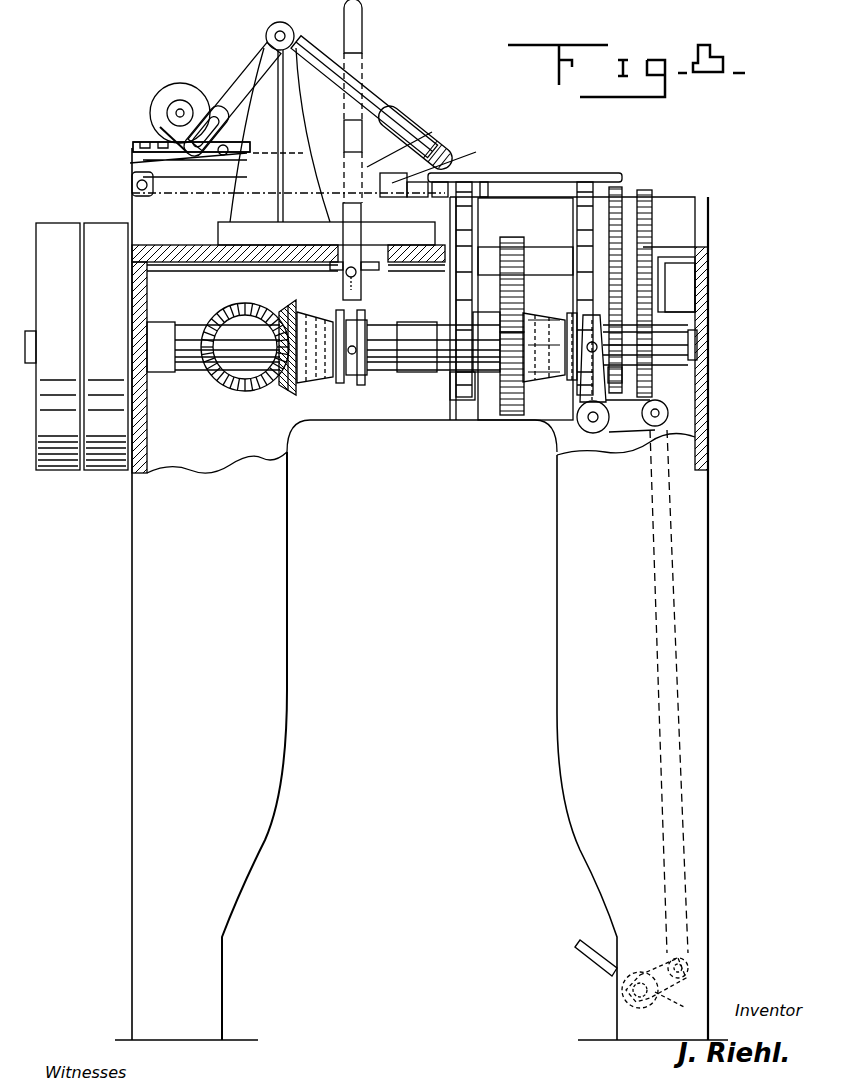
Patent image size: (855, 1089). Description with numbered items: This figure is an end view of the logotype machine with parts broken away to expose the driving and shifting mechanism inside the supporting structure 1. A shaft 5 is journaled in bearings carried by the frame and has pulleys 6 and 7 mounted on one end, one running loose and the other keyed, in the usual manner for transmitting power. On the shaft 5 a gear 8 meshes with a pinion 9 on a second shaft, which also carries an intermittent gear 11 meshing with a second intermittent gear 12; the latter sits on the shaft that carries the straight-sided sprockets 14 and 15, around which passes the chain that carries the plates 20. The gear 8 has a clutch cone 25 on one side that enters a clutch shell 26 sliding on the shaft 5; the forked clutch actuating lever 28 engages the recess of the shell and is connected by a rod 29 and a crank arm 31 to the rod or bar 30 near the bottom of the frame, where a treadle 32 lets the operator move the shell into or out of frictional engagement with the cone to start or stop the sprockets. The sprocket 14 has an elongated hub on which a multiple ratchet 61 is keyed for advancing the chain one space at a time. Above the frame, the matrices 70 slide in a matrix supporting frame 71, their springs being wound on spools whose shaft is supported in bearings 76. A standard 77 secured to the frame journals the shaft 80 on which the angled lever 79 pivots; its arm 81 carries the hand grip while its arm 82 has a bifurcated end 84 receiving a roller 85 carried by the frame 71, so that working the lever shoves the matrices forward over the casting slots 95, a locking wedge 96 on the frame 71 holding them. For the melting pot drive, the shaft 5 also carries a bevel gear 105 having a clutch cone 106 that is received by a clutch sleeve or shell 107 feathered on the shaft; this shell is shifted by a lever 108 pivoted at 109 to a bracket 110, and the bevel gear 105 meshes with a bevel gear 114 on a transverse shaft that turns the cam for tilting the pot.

The supporting structure 1 is at (273, 688).
The shaft 5 is at (190, 372).
The pulley 6 is at (58, 460).
The pulley 7 is at (110, 460).
The gear 8 is at (518, 397).
The pinion 9 is at (512, 241).
The intermittent gear 11 is at (653, 383).
The intermittent gear 12 is at (652, 262).
The sprocket 14 is at (618, 215).
The sprocket 15 is at (473, 232).
The plates 20 is at (587, 220).
The clutch cone 25 is at (545, 365).
The clutch shell 26 is at (568, 382).
The clutch actuating lever 28 is at (606, 405).
The rod 29 is at (660, 538).
The rod or bar 30 is at (703, 1010).
The crank arm 31 is at (684, 980).
The treadle 32 is at (590, 960).
The multiple ratchet 61 is at (645, 225).
The matrices 70 is at (410, 147).
The matrix supporting frame 71 is at (447, 156).
The bearings 76 is at (178, 102).
The standard 77 is at (293, 148).
The angled lever 79 is at (353, 80).
The shaft 80 is at (278, 32).
The arm 81 is at (314, 52).
The arm 82 is at (230, 88).
The bifurcated end 84 is at (178, 145).
The roller 85 is at (147, 157).
The casting slots 95 is at (453, 175).
The locking wedge 96 is at (250, 150).
The bevel gear 105 is at (288, 395).
The clutch cone 106 is at (313, 383).
The clutch sleeve or shell 107 is at (348, 385).
The lever 108 is at (362, 38).
The pivot 109 is at (357, 272).
The bracket 110 is at (367, 270).
The bevel gear 114 is at (250, 391).